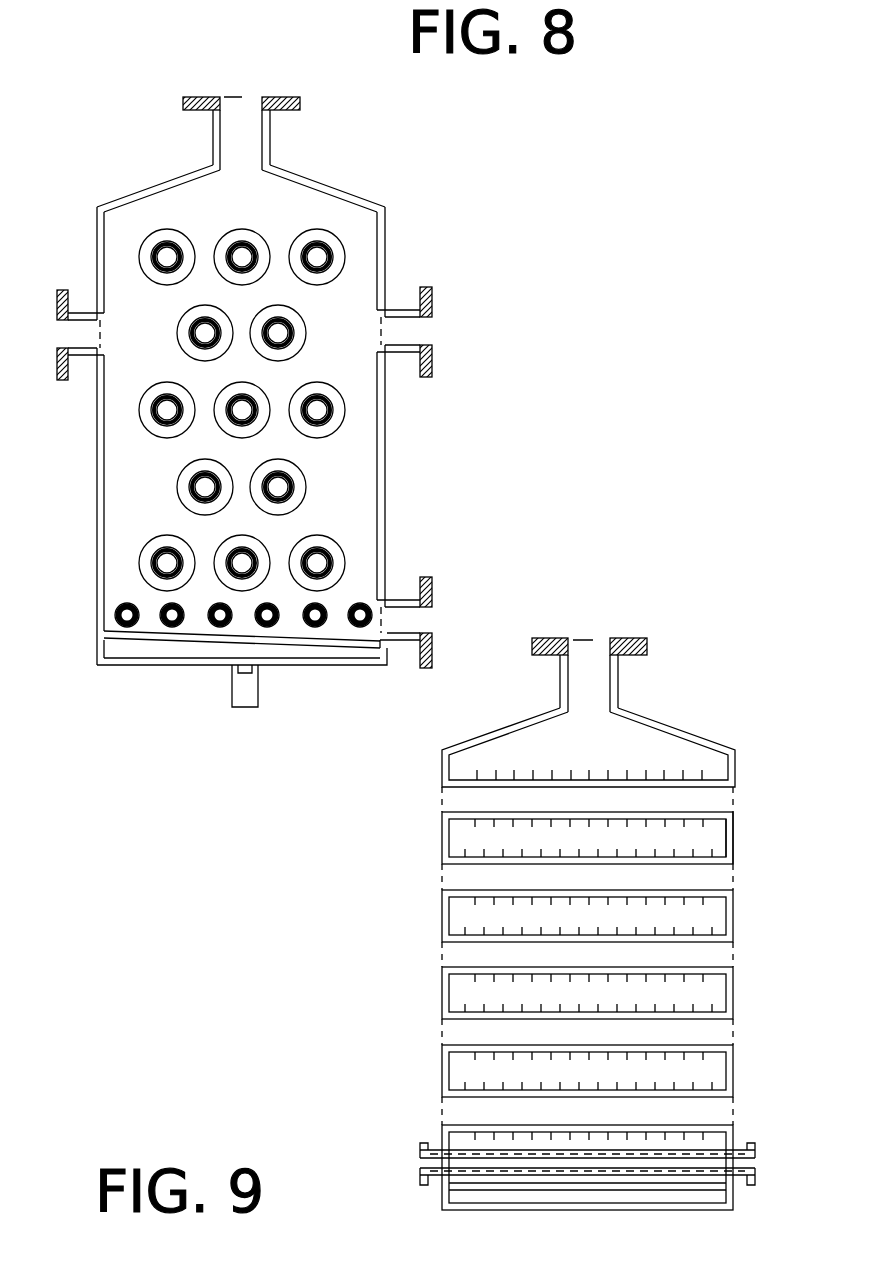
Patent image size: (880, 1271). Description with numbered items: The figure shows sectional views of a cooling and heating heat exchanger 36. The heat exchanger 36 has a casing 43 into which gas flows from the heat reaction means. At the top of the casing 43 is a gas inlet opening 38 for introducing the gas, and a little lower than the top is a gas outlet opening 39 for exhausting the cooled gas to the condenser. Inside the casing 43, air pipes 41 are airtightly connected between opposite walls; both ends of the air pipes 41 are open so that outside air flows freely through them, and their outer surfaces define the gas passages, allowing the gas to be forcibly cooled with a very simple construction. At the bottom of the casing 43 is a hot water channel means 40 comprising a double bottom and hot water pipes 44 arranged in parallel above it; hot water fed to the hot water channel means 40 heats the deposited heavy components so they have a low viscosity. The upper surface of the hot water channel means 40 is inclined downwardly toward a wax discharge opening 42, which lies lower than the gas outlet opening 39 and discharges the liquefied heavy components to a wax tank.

In FIG. 8, the cooling and heating heat exchanger 36 is at (363, 179).
In FIG. 9, the cooling and heating heat exchanger 36 is at (697, 723).
In FIG. 8, the gas inlet opening 38 is at (243, 118).
In FIG. 9, the gas inlet opening 38 is at (597, 655).
In FIG. 8, the gas outlet opening 39 is at (428, 341).
In FIG. 8, the hot water channel means 40 is at (334, 607).
In FIG. 8, the air pipes 41 is at (151, 257).
In FIG. 9, the air pipes 41 is at (446, 800).
In FIG. 8, the wax discharge opening 42 is at (429, 623).
In FIG. 8, the casing 43 is at (386, 472).
In FIG. 9, the casing 43 is at (736, 830).
In FIG. 8, the hot water pipes 44 is at (172, 628).
In FIG. 9, the hot water pipes 44 is at (432, 1167).